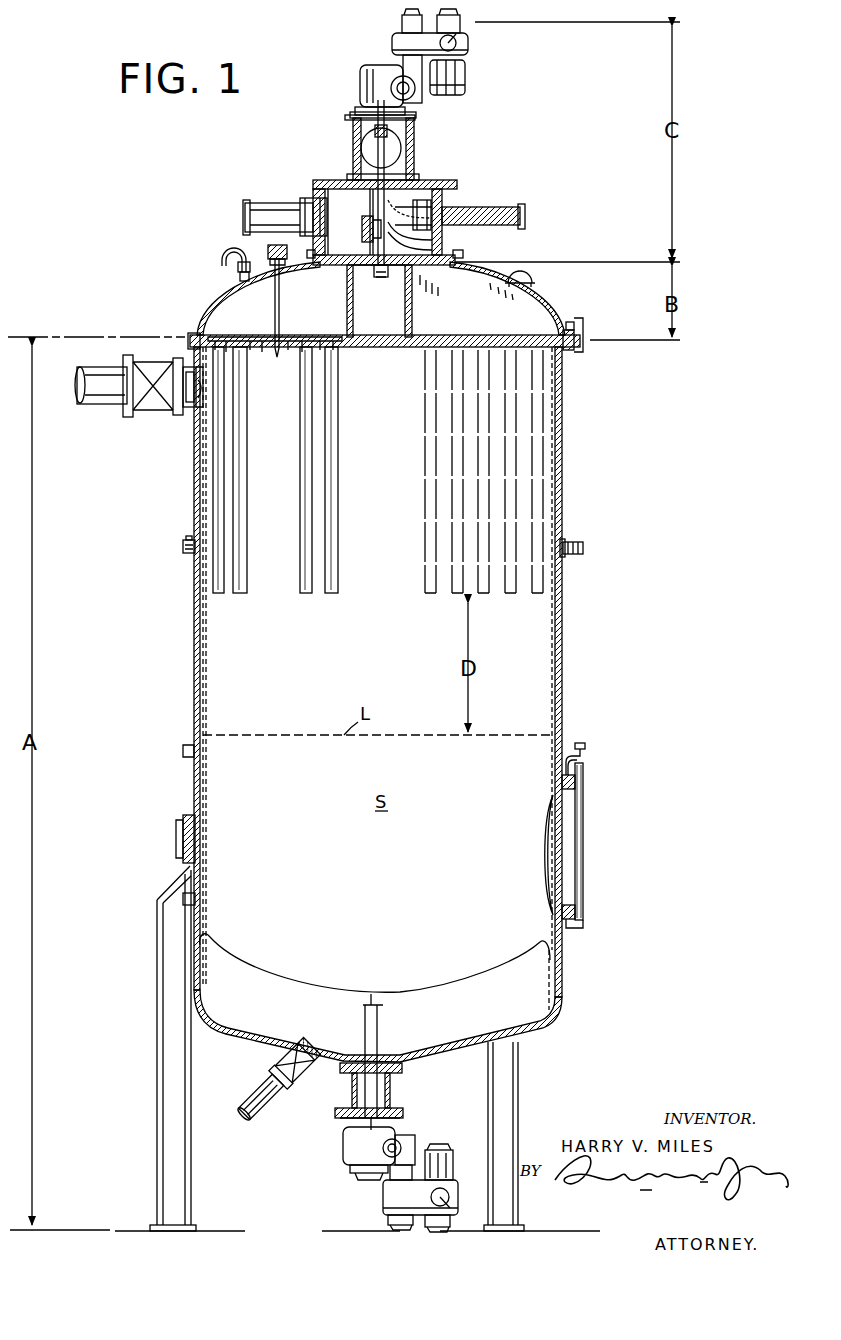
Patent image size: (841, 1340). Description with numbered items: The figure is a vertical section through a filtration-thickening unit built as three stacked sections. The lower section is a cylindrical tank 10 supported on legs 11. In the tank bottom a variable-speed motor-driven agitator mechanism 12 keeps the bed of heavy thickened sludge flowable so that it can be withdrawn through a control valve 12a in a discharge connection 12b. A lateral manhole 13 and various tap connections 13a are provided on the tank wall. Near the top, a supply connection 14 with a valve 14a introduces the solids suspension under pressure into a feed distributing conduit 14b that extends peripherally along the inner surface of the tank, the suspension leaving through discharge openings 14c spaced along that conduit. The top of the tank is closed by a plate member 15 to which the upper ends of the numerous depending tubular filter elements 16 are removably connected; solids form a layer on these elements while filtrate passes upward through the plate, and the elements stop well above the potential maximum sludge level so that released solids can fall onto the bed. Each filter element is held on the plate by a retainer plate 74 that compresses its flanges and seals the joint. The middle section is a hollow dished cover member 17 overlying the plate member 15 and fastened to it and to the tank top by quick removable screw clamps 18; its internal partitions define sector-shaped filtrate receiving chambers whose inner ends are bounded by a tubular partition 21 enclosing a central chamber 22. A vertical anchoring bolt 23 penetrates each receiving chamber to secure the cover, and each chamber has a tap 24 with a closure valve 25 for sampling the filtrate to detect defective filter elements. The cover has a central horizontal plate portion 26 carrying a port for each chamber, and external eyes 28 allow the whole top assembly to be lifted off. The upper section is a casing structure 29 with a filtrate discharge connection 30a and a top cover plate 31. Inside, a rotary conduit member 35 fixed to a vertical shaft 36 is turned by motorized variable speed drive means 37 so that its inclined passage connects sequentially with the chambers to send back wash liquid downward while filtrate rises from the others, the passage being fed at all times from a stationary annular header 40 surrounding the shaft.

The cylindrical tank 10 is at (176, 656).
The legs 11 is at (156, 970).
The agitator mechanism 12 is at (325, 1115).
The control valve 12a is at (282, 1076).
The discharge connection 12b is at (252, 1104).
The lateral manhole 13 is at (583, 848).
The tap connections 13a is at (617, 545).
The supply connection 14 is at (107, 393).
The valve 14a is at (159, 397).
The feed distributing conduit 14b is at (218, 394).
The discharge openings 14c is at (203, 388).
The plate member 15 is at (190, 340).
The tubular filter elements 16 is at (333, 521).
The cover member 17 is at (545, 308).
The screw clamps 18 is at (584, 334).
The tubular partition 21 is at (407, 306).
The central chamber 22 is at (388, 325).
The anchoring bolt 23 is at (281, 314).
The tap 24 is at (228, 252).
The closure valve 25 is at (236, 268).
The central horizontal plate portion 26 is at (441, 265).
The external eyes 28 is at (534, 281).
The casing structure 29 is at (459, 181).
The filtrate discharge connection 30a is at (275, 206).
The top cover plate 31 is at (424, 188).
The rotary conduit member 35 is at (362, 251).
The vertical shaft 36 is at (374, 162).
The variable speed drive means 37 is at (360, 84).
The stationary annular header 40 is at (369, 216).
The retainer plate 74 is at (224, 338).